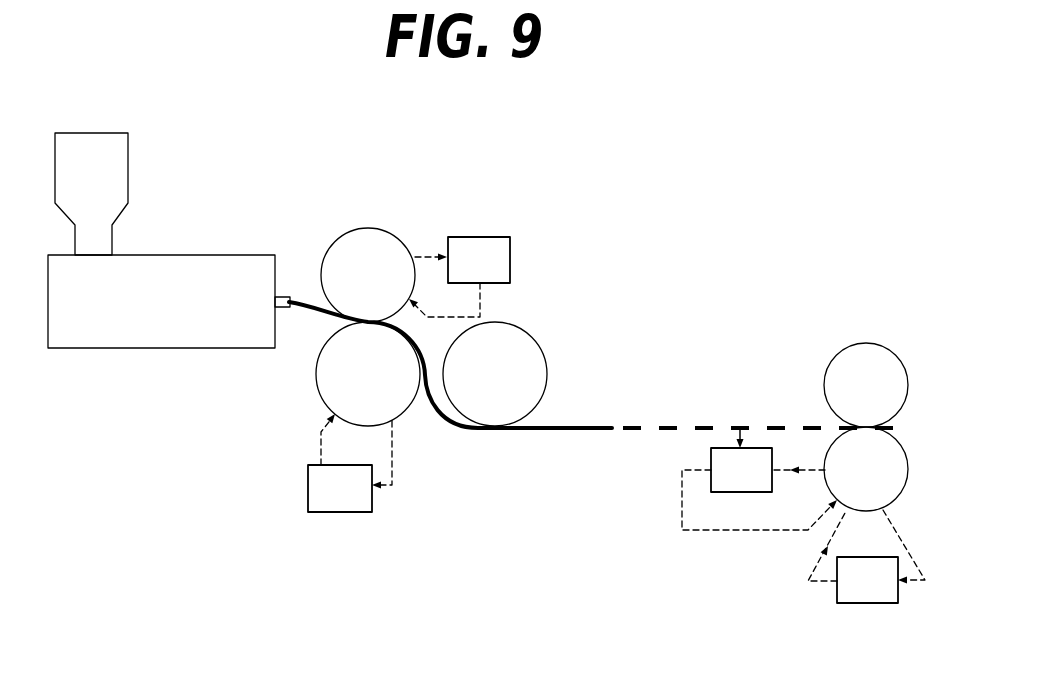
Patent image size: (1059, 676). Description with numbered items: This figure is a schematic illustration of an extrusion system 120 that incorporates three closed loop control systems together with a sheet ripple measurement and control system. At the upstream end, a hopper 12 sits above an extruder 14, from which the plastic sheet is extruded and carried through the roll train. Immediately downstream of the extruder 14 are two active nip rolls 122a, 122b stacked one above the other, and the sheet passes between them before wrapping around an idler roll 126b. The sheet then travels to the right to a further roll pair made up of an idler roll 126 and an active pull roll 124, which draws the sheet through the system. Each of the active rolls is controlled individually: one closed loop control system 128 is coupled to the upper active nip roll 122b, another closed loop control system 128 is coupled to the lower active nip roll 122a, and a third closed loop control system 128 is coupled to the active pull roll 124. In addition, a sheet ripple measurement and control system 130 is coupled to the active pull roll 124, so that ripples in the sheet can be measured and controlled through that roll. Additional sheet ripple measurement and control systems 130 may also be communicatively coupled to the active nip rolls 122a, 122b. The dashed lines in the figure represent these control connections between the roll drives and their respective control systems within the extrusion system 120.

The hopper 12 is at (113, 183).
The extruder 14 is at (127, 338).
The extrusion system 120 is at (646, 150).
The active nip roll 122a is at (400, 403).
The active nip roll 122b is at (383, 243).
The active pull roll 124 is at (858, 493).
The idler roll 126 is at (865, 353).
The idler roll 126b is at (527, 353).
The closed loop control system 128 is at (458, 272).
The sheet ripple measurement and control system 130 is at (720, 484).